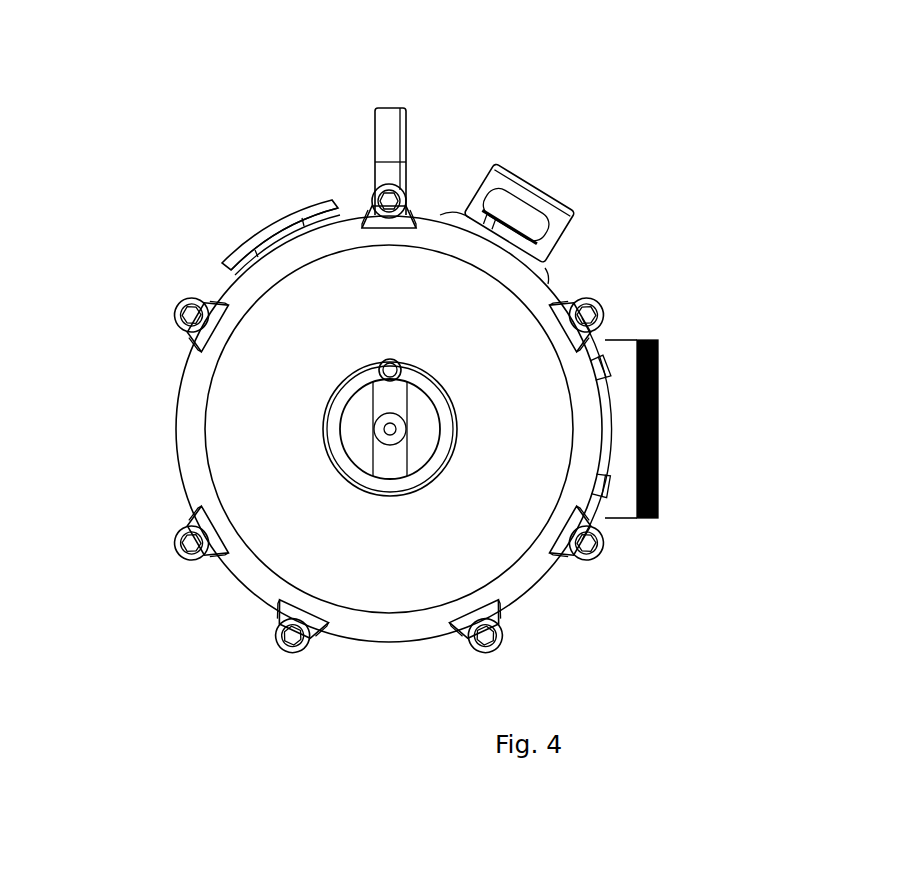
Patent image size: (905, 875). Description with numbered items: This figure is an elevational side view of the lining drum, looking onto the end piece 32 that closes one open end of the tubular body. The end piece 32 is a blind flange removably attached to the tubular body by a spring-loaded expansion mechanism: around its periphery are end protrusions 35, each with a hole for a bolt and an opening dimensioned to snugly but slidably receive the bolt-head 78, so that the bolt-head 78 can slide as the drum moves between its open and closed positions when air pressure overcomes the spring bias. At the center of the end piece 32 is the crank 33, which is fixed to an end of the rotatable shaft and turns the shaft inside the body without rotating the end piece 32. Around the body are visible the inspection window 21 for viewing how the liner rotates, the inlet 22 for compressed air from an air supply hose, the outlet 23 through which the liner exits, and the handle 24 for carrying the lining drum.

The inspection window 21 is at (300, 208).
The inlet 22 is at (520, 173).
The outlet 23 is at (652, 340).
The handle 24 is at (387, 118).
The end piece 32 is at (320, 565).
The crank 33 is at (401, 364).
The end protrusion 35 is at (375, 187).
The bolt-head 78 is at (405, 189).